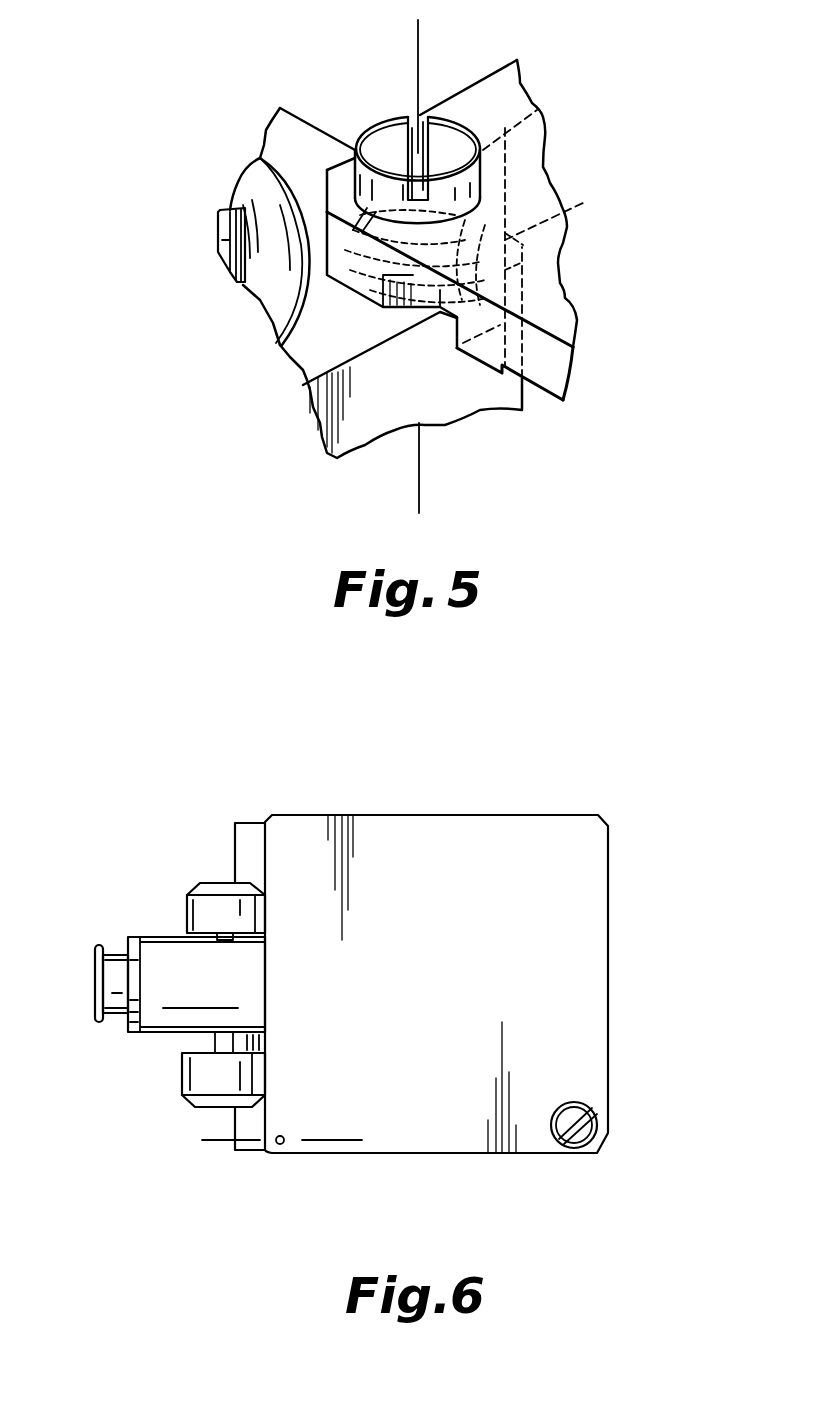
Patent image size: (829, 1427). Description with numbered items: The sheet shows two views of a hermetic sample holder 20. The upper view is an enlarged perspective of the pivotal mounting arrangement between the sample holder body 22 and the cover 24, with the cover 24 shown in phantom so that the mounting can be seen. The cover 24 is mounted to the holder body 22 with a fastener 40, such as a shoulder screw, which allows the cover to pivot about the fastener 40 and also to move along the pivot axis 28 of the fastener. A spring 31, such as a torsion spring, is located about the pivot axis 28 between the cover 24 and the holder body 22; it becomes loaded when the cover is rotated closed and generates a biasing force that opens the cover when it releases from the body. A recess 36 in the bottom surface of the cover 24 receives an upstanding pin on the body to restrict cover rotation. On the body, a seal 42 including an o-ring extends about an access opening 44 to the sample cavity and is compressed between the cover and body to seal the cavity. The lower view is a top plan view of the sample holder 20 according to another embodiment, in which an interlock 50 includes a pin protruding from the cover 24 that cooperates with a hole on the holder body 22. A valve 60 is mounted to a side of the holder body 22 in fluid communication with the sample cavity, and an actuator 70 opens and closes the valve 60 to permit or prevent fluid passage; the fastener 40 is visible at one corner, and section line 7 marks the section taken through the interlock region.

In FIG. 6, the hermetic sample holder 20 is at (614, 757).
In FIG. 5, the sample holder body 22 is at (280, 132).
In FIG. 5, the cover 24 is at (555, 273).
In FIG. 6, the cover 24 is at (593, 927).
In FIG. 5, the pivot axis 28 is at (416, 36).
In FIG. 5, the spring 31 is at (497, 235).
In FIG. 5, the recess 36 is at (410, 315).
In FIG. 5, the fastener 40 is at (381, 114).
In FIG. 6, the fastener 40 is at (599, 1122).
In FIG. 5, the seal 42 is at (265, 297).
In FIG. 5, the access opening 44 is at (216, 242).
In FIG. 6, the interlock 50 is at (282, 1165).
In FIG. 6, the valve 60 is at (156, 938).
In FIG. 6, the actuator 70 is at (186, 1078).
In FIG. 6, the section line 7- 7 is at (347, 1160).